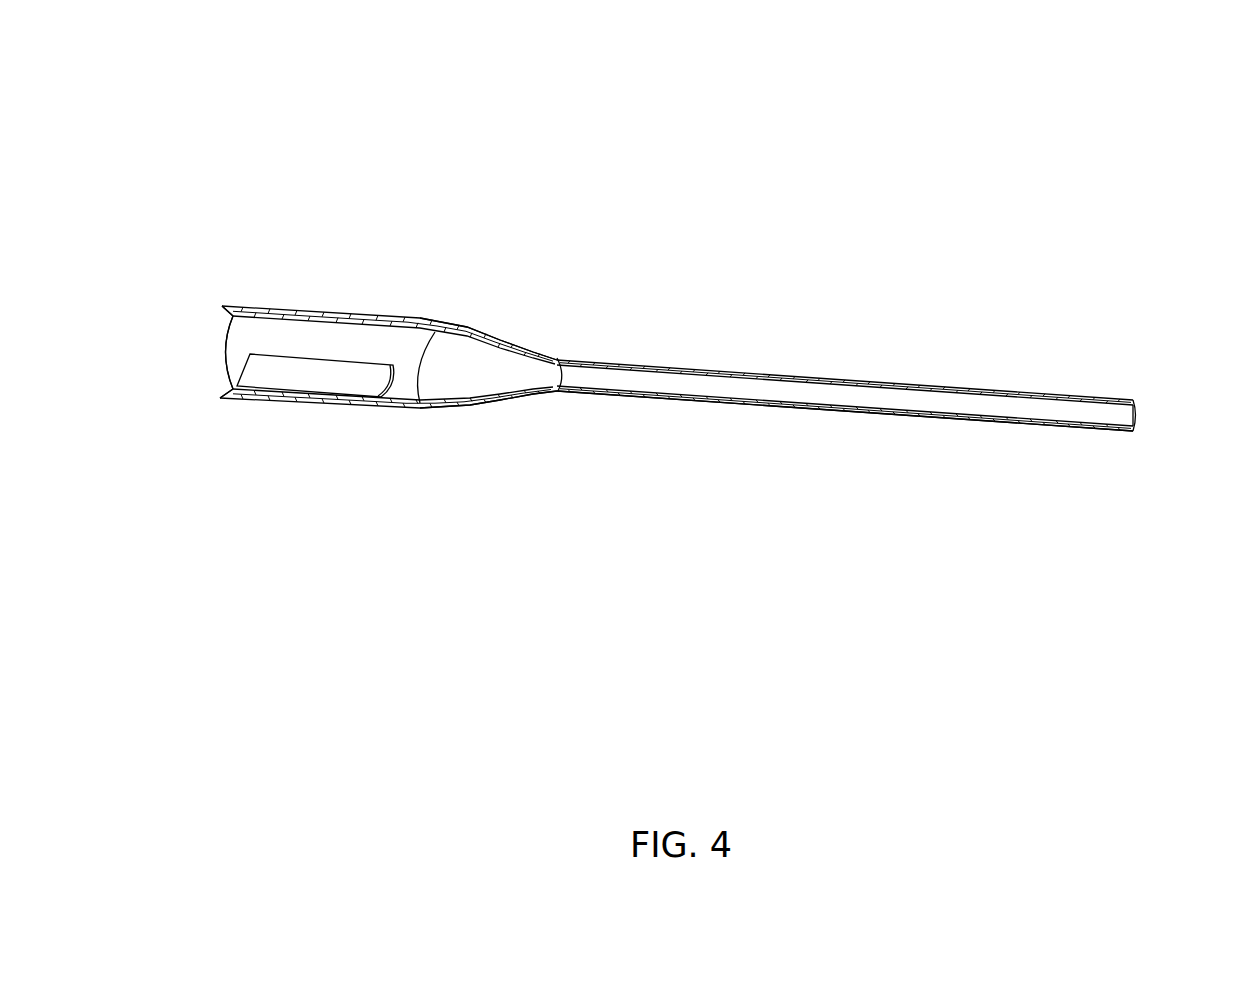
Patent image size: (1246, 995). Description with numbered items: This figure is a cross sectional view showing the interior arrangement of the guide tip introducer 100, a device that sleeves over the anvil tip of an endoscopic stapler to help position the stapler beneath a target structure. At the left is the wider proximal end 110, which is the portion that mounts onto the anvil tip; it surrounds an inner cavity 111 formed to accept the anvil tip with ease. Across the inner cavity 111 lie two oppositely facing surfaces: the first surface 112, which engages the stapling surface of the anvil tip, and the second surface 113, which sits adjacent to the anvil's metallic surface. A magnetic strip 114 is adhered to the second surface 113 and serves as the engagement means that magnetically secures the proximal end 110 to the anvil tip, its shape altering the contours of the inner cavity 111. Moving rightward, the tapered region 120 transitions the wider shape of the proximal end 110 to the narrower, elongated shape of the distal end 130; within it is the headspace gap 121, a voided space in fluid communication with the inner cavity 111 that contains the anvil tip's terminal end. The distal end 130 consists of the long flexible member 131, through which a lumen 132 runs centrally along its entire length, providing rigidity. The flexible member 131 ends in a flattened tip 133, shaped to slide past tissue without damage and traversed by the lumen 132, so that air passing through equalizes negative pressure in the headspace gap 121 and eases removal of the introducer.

The guide tip introducer 100 is at (635, 247).
The proximal end 110 is at (338, 312).
The inner cavity 111 is at (231, 348).
The first surface 112 is at (222, 309).
The second surface 113 is at (220, 391).
The magnetic strip 114 is at (307, 366).
The tapered region 120 is at (467, 322).
The headspace gap 121 is at (483, 366).
The distal end 130 is at (793, 355).
The flexible member 131 is at (767, 404).
The lumen 132 is at (1118, 415).
The flattened tip 133 is at (1133, 400).